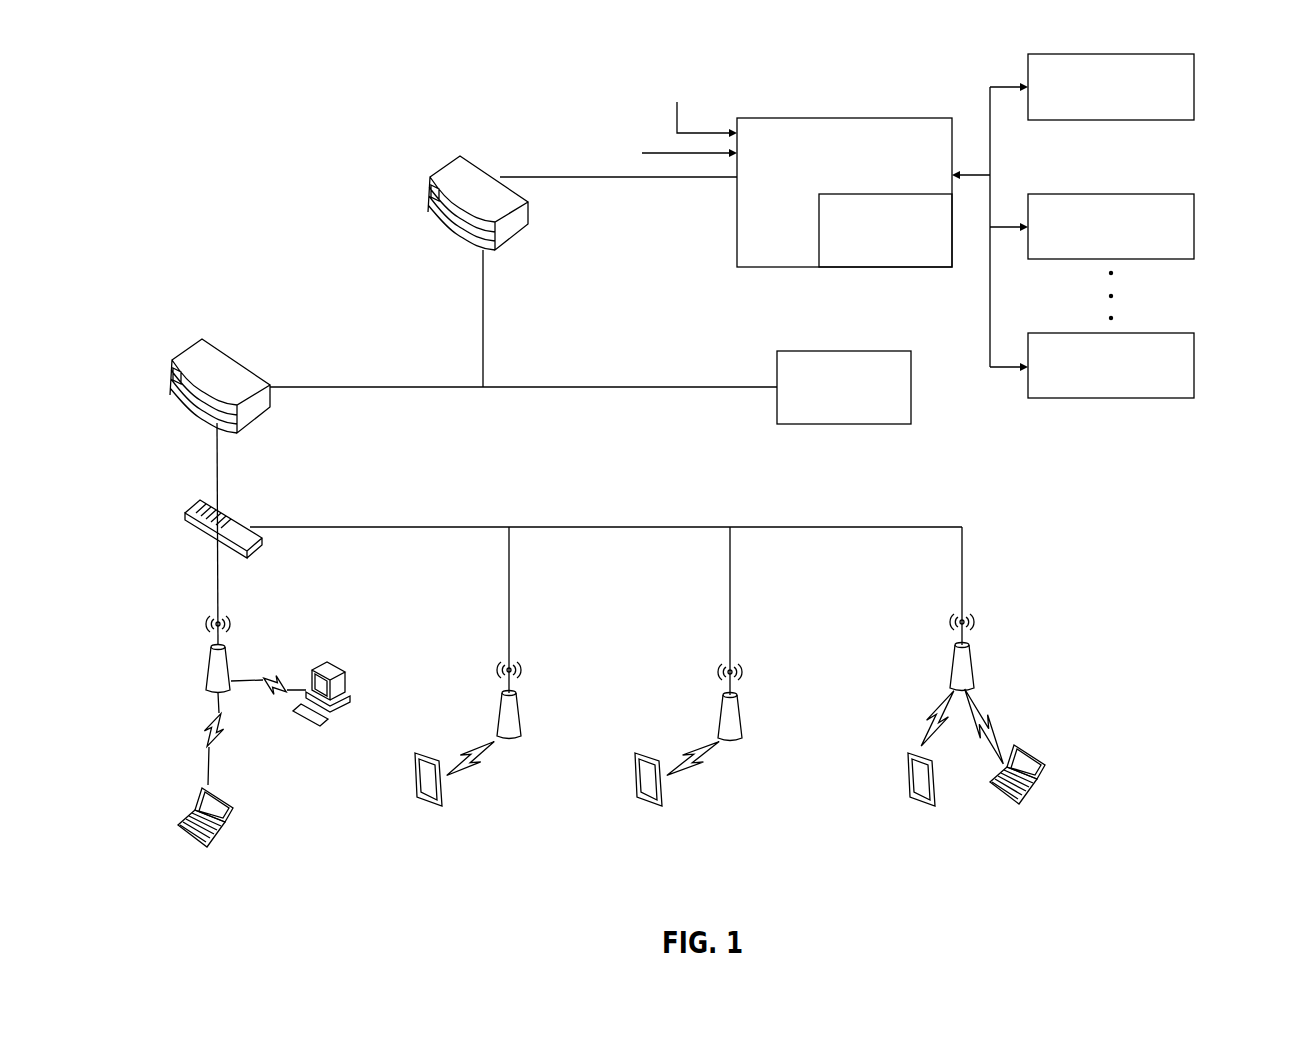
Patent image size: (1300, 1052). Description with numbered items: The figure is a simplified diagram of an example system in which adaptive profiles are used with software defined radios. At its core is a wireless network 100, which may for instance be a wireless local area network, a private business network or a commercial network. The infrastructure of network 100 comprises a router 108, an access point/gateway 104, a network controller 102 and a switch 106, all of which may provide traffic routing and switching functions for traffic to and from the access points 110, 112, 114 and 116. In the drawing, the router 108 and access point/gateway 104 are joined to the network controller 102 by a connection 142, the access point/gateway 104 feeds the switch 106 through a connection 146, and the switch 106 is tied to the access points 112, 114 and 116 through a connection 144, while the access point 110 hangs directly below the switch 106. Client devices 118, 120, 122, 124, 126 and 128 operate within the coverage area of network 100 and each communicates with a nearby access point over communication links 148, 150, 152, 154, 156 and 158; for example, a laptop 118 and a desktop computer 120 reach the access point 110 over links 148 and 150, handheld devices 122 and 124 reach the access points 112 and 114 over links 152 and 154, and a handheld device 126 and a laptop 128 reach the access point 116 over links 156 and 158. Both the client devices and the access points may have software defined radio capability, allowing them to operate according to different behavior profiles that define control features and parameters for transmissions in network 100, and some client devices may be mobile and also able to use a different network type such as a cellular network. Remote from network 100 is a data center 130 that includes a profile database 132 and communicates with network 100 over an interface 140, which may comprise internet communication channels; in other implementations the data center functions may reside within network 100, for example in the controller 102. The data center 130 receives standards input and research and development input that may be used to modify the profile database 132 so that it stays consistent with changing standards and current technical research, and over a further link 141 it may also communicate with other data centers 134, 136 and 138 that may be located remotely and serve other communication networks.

The wireless network 100 is at (303, 208).
The network controller 102 is at (912, 390).
The access point/gateway 104 is at (237, 360).
The switch 106 is at (231, 518).
The router 108 is at (533, 213).
The access point 110 is at (232, 662).
The access point 112 is at (523, 712).
The access point 114 is at (740, 712).
The access point 116 is at (973, 670).
The client device 118 is at (233, 820).
The client device 120 is at (347, 708).
The client device 122 is at (420, 798).
The client device 124 is at (640, 798).
The client device 126 is at (915, 800).
The client device 128 is at (1027, 752).
The data center 130 is at (845, 118).
The profile database 132 is at (887, 268).
The data center 134 is at (1195, 88).
The data center 136 is at (1195, 228).
The data center 138 is at (1195, 367).
The interface 140 is at (657, 178).
The communication link 141 is at (990, 112).
The communication link 142 is at (578, 390).
The communication link 144 is at (617, 527).
The communication link 146 is at (217, 470).
The communication link 148 is at (203, 737).
The communication link 150 is at (264, 678).
The communication link 152 is at (485, 758).
The communication link 154 is at (705, 757).
The communication link 156 is at (928, 723).
The communication link 158 is at (990, 717).